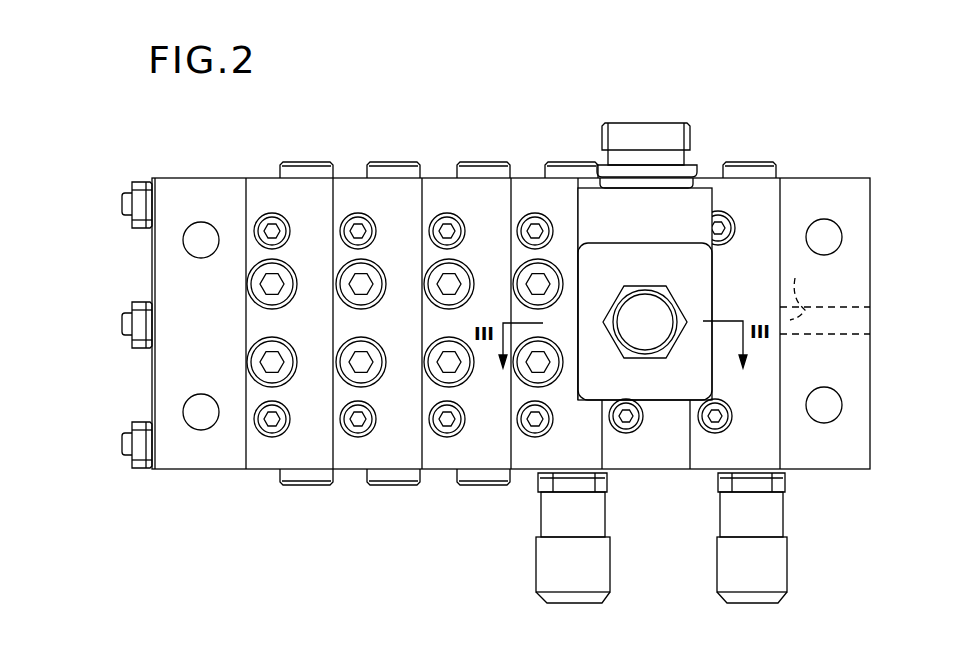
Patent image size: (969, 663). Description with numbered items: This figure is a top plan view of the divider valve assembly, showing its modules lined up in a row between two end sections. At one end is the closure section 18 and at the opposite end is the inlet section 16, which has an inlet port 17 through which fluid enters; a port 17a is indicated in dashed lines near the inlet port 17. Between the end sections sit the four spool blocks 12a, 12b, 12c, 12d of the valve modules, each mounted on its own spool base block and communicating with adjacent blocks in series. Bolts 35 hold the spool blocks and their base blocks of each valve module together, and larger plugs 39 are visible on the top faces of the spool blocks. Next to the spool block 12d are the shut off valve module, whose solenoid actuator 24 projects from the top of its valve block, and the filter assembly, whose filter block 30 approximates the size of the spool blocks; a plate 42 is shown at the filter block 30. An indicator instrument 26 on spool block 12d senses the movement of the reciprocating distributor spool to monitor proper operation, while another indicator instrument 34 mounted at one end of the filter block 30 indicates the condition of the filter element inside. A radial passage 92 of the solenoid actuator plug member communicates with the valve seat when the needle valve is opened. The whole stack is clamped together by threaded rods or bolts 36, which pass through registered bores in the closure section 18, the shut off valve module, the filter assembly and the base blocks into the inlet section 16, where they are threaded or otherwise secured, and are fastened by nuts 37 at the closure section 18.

The closure section 18 is at (172, 186).
The spool block 12a is at (253, 186).
The spool block 12b is at (353, 186).
The spool block 12c is at (442, 186).
The spool block 12d is at (532, 186).
The bolts 35 is at (358, 231).
The plug 39 is at (323, 163).
The solenoid actuator 24 is at (683, 263).
The plate 42 is at (773, 167).
The filter block 30 is at (767, 213).
The inlet section 16 is at (870, 365).
The inlet port 17 is at (870, 313).
The port 17a is at (800, 286).
The radial passage 92 is at (627, 420).
The indicator instrument 26 is at (592, 562).
The indicator instrument 34 is at (770, 565).
The threaded rods or bolts 36 is at (122, 447).
The nuts 37 is at (142, 224).